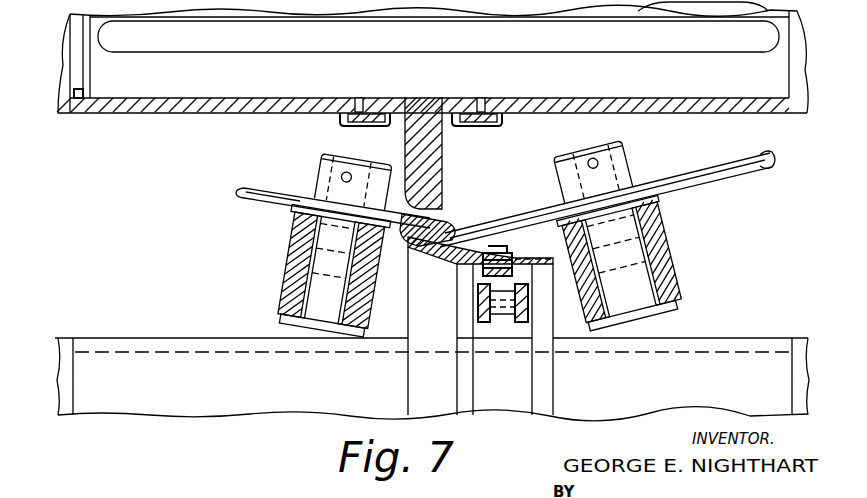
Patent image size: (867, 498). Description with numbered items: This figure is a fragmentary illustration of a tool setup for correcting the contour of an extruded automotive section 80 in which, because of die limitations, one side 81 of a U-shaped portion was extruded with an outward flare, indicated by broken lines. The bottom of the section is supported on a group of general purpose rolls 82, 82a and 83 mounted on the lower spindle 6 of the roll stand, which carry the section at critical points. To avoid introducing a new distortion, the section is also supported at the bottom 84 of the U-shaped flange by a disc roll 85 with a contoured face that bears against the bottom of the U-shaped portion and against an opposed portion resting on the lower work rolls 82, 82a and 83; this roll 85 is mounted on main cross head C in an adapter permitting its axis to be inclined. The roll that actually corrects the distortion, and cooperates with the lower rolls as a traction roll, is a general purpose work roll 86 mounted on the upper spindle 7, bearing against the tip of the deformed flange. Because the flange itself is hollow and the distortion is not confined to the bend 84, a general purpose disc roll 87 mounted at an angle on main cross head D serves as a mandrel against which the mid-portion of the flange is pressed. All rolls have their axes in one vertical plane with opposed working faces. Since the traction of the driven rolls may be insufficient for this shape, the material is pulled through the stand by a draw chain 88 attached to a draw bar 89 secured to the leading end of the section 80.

The upper spindle 7 is at (235, 108).
The general purpose work roll 86 is at (442, 162).
The general purpose disc roll 87 is at (294, 187).
The side of U-shaped portion 81 is at (440, 213).
The bottom of the U-shaped flange 84 is at (472, 220).
The disc roll 85 is at (692, 162).
The main cross head D is at (280, 258).
The main cross head C is at (678, 265).
The draw bar 89 is at (472, 266).
The section 80 is at (505, 246).
The general purpose roll 82 is at (407, 378).
The general purpose roll 82a is at (464, 398).
The general purpose roll 83 is at (553, 373).
The draw chain 88 is at (503, 320).
The lower spindle 6 is at (202, 338).